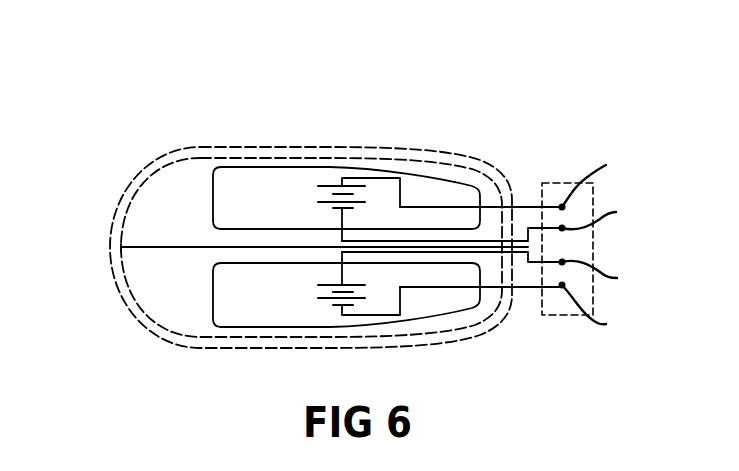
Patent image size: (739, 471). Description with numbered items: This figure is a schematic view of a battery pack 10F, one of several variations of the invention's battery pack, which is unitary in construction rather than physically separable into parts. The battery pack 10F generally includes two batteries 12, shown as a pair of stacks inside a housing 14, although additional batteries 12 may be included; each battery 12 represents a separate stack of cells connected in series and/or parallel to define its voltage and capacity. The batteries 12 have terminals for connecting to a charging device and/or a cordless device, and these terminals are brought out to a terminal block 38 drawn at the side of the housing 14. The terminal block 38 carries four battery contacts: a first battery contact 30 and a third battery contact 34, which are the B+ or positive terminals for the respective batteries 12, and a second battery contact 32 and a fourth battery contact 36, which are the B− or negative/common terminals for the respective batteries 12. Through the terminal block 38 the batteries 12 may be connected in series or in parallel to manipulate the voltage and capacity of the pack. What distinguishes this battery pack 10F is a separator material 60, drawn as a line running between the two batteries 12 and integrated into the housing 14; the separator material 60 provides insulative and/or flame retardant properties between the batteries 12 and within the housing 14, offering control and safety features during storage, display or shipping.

The battery pack 10F is at (160, 118).
The battery 12 is at (252, 185).
The housing 14 is at (463, 145).
The first battery contact 30 is at (521, 178).
The second battery contact 32 is at (498, 218).
The third battery contact 34 is at (499, 274).
The fourth battery contact 36 is at (522, 318).
The terminal block 38 is at (555, 183).
The separator material 60 is at (150, 247).